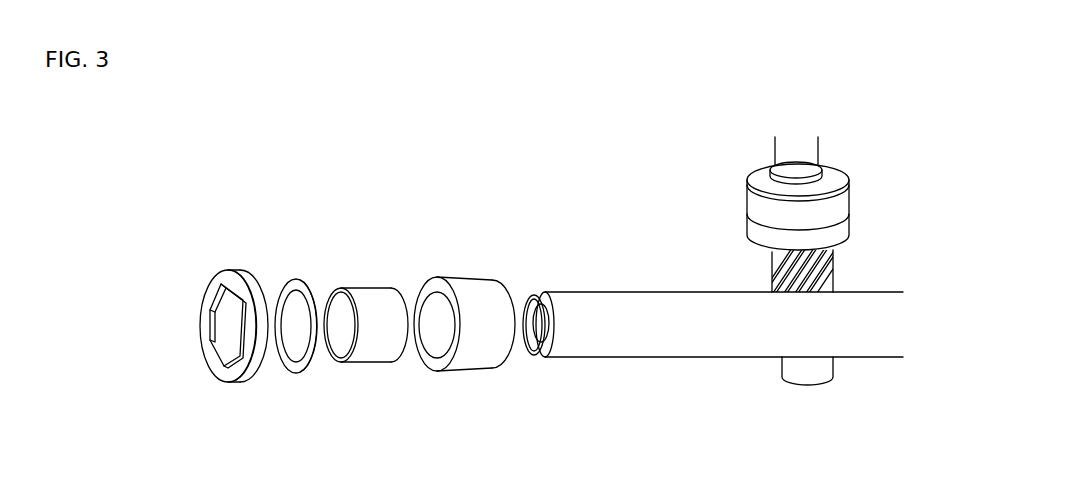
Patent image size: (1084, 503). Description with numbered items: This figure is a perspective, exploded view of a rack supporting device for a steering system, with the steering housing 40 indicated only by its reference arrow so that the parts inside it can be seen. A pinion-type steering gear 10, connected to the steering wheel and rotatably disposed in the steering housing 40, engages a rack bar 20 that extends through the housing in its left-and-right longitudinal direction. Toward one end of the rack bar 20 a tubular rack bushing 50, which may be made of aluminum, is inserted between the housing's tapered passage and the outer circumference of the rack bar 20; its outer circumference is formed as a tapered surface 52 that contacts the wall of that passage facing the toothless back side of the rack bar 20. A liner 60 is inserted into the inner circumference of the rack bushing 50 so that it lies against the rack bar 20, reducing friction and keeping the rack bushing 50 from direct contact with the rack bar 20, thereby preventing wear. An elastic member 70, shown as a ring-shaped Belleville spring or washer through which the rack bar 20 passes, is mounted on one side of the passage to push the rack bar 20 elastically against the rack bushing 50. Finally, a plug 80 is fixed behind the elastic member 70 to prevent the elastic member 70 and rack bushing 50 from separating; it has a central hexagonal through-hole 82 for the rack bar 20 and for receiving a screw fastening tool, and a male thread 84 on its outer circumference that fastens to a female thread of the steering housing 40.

The steering gear 10 is at (830, 280).
The rack bar 20 is at (737, 351).
The steering housing 40 is at (697, 258).
The rack bushing 50 is at (473, 277).
The tapered surface 52 is at (488, 364).
The liner 60 is at (363, 295).
The elastic member 70 is at (293, 287).
The plug 80 is at (208, 283).
The through-hole 82 is at (220, 336).
The male thread 84 is at (253, 285).